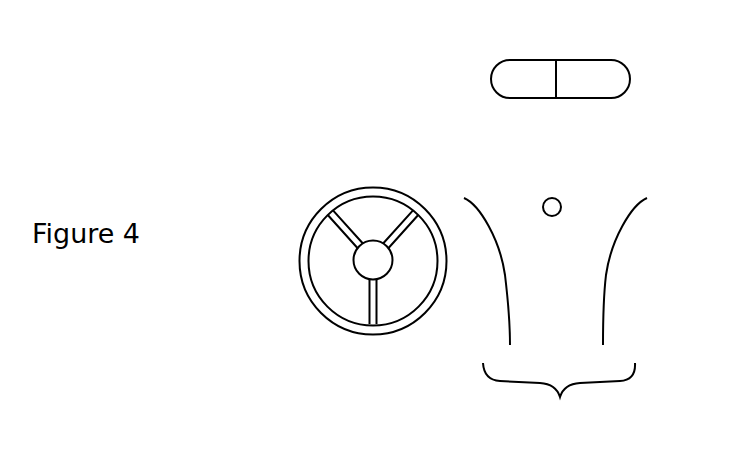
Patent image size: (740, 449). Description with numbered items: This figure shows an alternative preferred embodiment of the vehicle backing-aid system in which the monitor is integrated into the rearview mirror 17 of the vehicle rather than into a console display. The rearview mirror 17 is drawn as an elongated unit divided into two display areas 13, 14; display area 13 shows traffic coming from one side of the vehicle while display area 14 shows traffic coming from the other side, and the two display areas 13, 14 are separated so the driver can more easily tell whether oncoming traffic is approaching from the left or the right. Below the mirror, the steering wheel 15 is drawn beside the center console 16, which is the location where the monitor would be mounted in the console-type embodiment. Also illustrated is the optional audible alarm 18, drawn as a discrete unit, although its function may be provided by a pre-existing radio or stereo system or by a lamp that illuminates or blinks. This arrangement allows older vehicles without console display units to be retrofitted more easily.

The display area 13 is at (528, 70).
The display area 14 is at (583, 70).
The rearview mirror 17 is at (542, 98).
The steering wheel 15 is at (355, 197).
The center console 16 is at (555, 317).
The audible alarm 18 is at (553, 198).